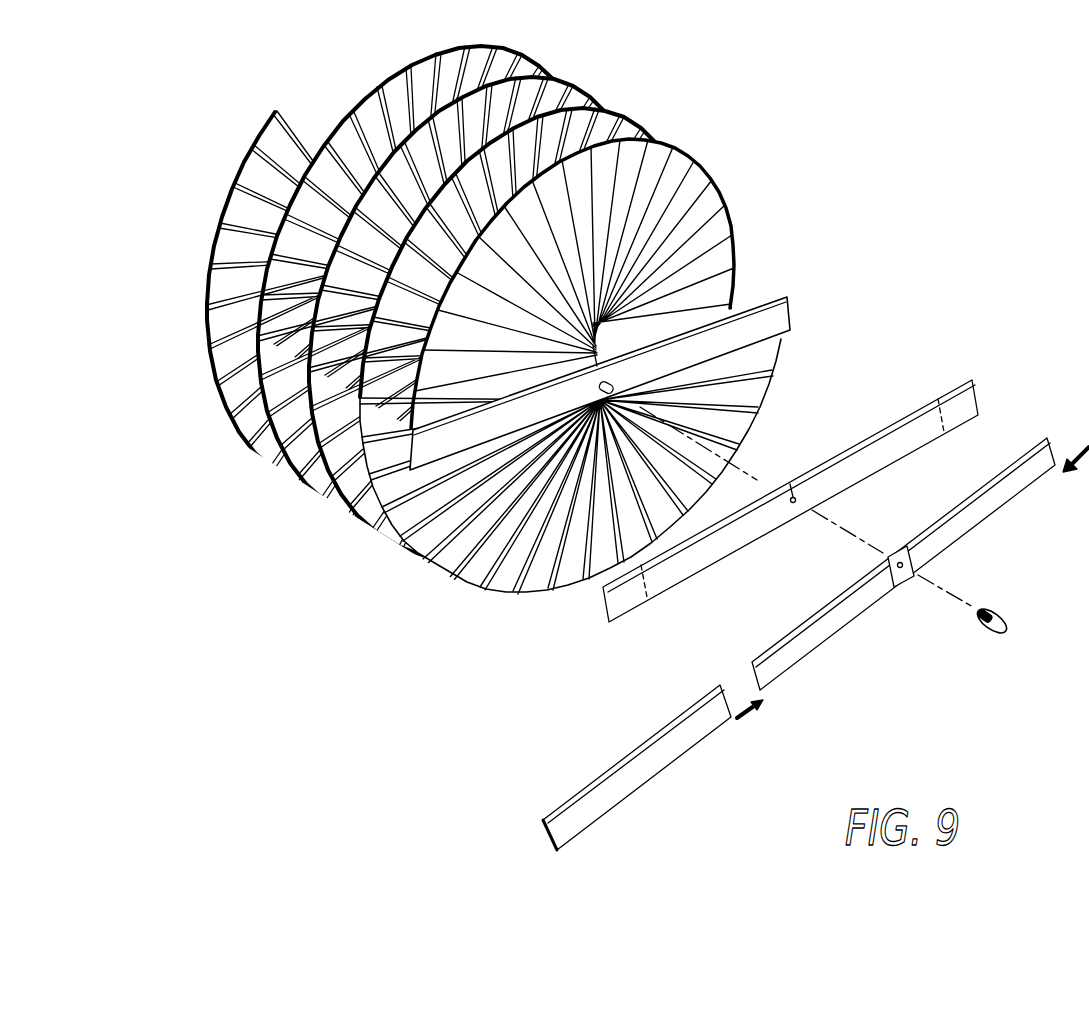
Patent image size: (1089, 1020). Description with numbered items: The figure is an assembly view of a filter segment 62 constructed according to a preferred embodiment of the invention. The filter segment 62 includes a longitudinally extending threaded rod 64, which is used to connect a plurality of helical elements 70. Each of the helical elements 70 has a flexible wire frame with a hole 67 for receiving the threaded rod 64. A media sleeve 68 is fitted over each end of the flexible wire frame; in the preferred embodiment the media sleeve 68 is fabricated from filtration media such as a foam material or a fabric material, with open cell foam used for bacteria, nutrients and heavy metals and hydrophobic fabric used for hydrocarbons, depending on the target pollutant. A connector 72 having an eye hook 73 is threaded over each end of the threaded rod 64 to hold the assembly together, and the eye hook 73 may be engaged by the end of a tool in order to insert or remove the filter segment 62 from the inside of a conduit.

The filter segment 62 is at (770, 141).
The threaded rod 64 is at (613, 386).
The hole 67 is at (910, 573).
The media sleeve 68 is at (1012, 498).
The helical element 70 is at (943, 397).
The connector 72 is at (983, 628).
The eye hook 73 is at (1007, 612).